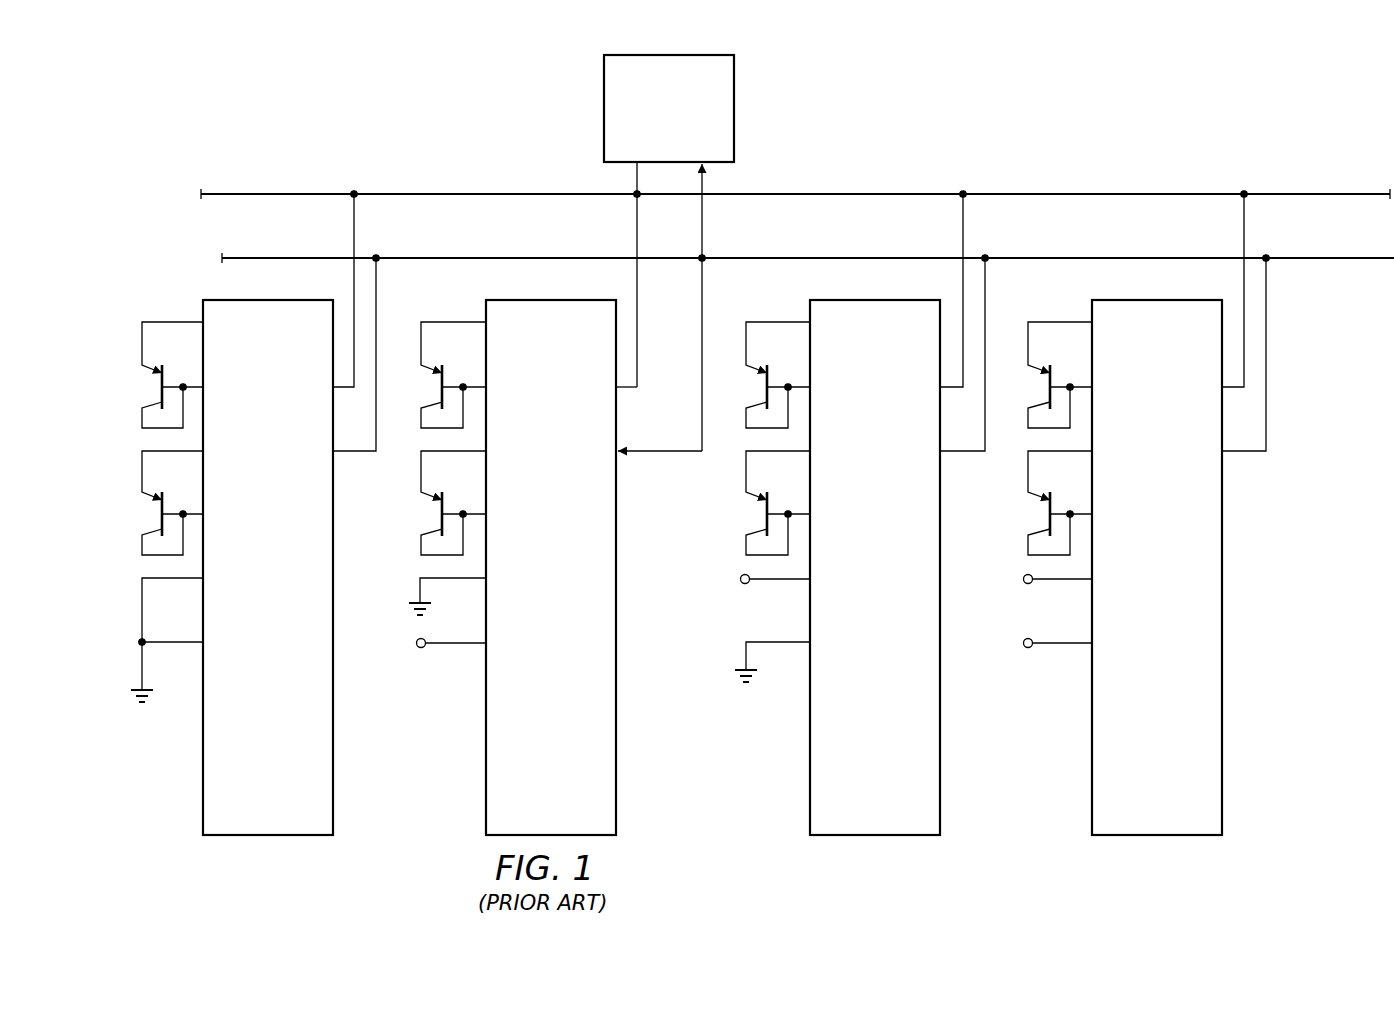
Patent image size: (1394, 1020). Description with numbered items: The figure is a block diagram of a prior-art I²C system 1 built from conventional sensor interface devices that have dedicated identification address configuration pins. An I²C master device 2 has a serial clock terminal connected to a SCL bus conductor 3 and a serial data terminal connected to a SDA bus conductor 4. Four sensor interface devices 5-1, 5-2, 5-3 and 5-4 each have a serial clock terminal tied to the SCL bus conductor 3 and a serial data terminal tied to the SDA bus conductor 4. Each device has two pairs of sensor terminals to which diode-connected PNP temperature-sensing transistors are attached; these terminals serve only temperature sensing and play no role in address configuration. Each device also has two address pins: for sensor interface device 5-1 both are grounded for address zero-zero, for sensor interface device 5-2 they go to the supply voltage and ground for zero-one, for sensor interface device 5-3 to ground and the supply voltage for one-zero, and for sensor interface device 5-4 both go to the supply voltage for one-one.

The I²C system 1 is at (378, 93).
The I²C master device 2 is at (604, 108).
The SCL bus conductor 3 is at (1112, 194).
The SDA bus conductor 4 is at (1090, 258).
The sensor interface device 5-1 is at (250, 811).
The sensor interface device 5-2 is at (533, 811).
The sensor interface device 5-3 is at (857, 811).
The sensor interface device 5-4 is at (1139, 811).